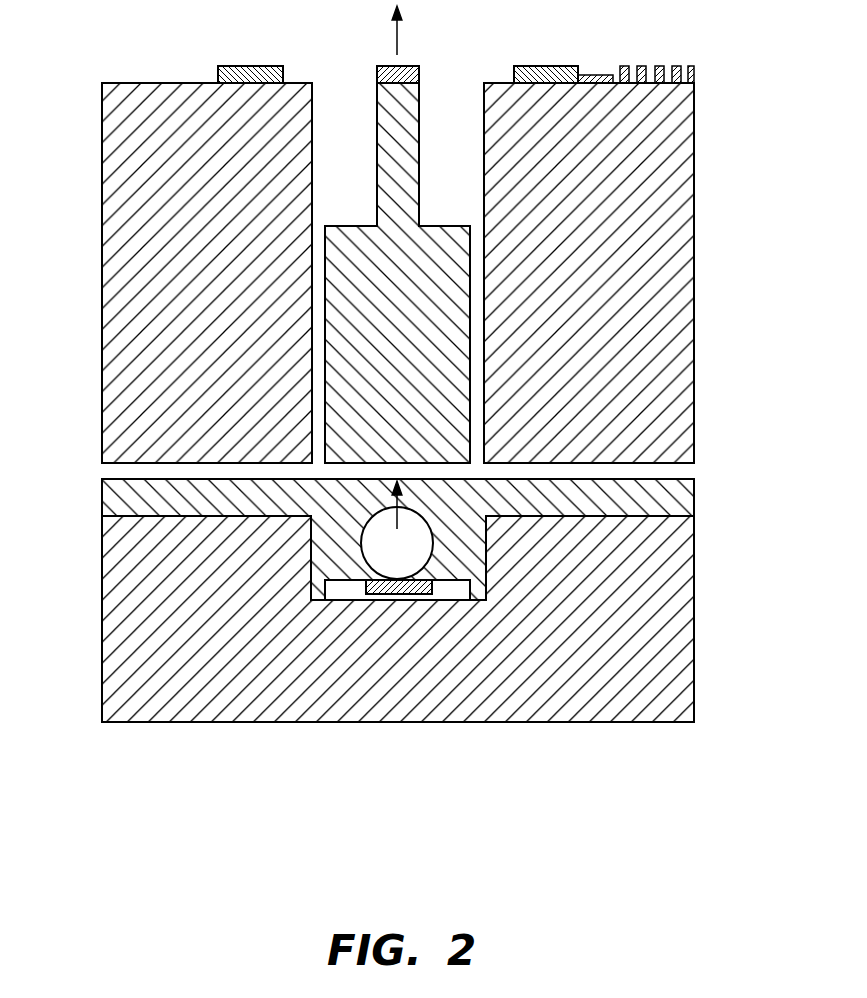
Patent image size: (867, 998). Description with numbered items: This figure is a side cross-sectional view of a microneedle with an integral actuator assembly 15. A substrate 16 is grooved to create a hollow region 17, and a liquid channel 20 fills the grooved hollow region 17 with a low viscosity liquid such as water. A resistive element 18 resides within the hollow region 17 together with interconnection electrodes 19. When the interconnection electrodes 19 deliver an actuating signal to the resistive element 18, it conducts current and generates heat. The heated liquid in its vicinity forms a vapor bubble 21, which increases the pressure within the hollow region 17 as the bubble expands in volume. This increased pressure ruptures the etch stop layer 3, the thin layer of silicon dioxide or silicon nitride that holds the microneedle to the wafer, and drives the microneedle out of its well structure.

The etch stop layer 3 is at (690, 471).
The integral actuator assembly 15 is at (398, 638).
The substrate 16 is at (108, 578).
The hollow region 17 is at (318, 553).
The resistive element 18 is at (395, 592).
The interconnection electrodes 19 is at (347, 590).
The liquid channel 20 is at (431, 539).
The vapor bubble 21 is at (428, 541).